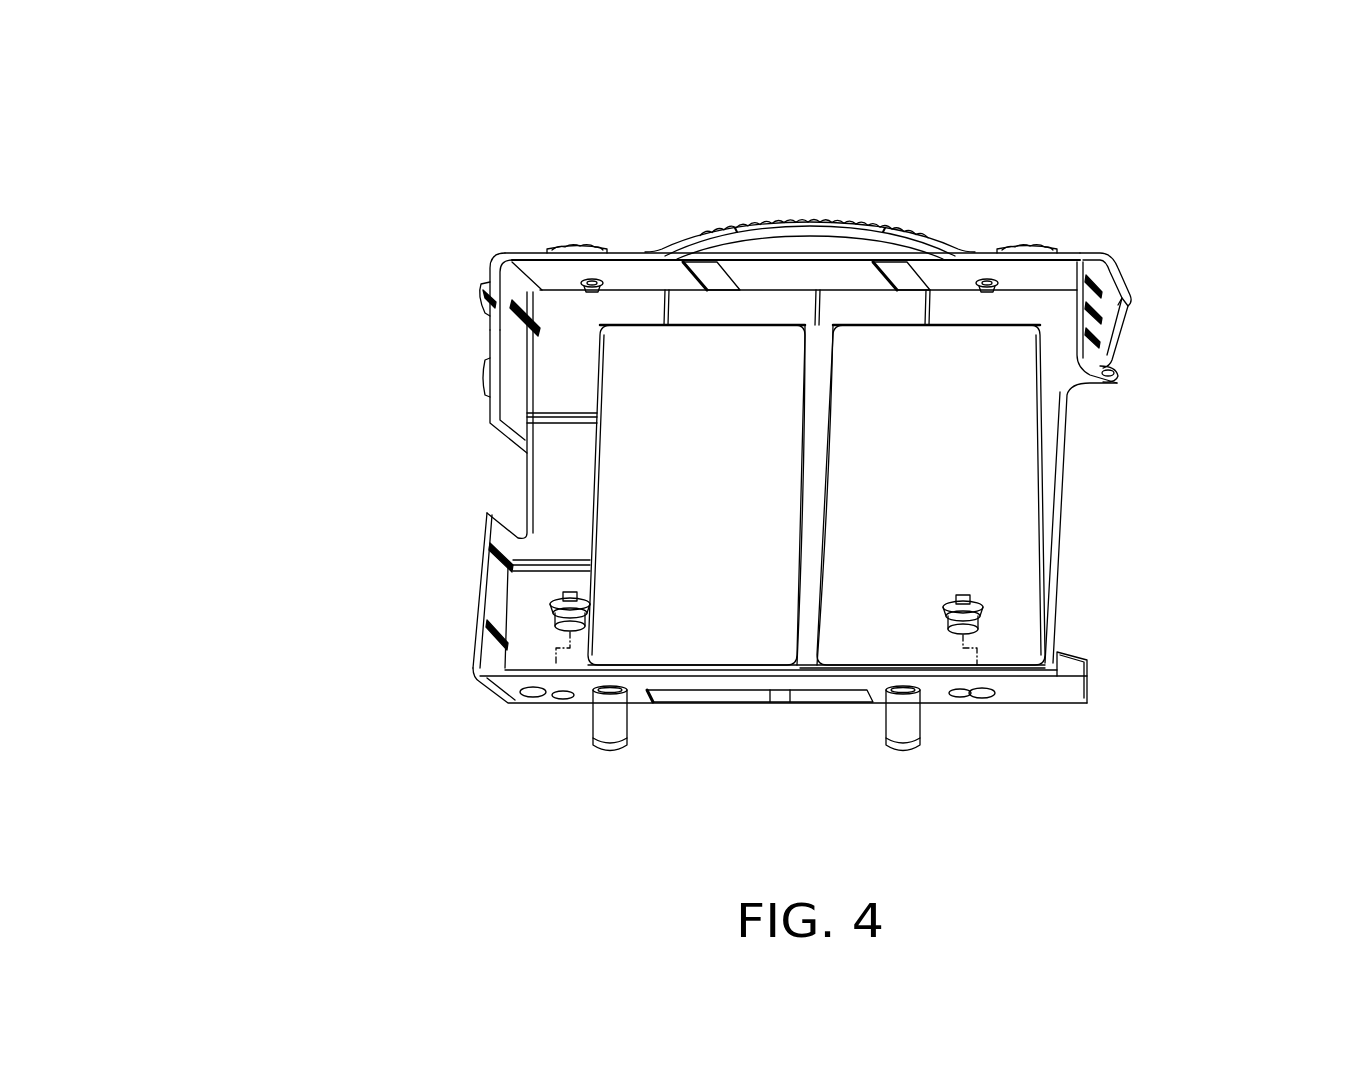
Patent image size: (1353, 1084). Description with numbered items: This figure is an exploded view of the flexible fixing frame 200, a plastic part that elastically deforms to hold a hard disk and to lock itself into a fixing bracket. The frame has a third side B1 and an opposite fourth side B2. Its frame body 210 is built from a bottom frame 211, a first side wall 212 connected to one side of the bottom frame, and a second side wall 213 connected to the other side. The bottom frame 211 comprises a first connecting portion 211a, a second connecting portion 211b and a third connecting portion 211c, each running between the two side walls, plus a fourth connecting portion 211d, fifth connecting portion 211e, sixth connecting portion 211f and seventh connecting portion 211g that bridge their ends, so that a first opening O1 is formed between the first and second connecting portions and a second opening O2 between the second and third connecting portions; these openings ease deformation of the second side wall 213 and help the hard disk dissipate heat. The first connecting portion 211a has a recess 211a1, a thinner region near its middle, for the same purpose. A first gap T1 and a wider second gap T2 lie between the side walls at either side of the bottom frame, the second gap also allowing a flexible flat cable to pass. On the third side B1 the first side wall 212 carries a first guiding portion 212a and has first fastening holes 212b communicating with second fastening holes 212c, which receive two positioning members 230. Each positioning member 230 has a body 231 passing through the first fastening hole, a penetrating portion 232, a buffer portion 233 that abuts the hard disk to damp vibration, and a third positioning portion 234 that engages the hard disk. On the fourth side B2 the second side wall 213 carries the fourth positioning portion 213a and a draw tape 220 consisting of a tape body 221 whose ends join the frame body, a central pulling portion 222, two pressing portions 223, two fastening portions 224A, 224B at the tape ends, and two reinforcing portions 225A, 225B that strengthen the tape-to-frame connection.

The flexible fixing frame 200 is at (1276, 819).
The frame body 210 is at (664, 525).
The bottom frame 211 is at (210, 394).
The first connecting portion 211a is at (540, 518).
The second connecting portion 211b is at (822, 471).
The third connecting portion 211c is at (1057, 467).
The fourth connecting portion 211d is at (688, 666).
The fifth connecting portion 211e is at (735, 310).
The sixth connecting portion 211f is at (871, 666).
The seventh connecting portion 211g is at (954, 310).
The recess 211a1 is at (576, 496).
The first side wall 212 is at (505, 688).
The first guiding portion 212a is at (612, 736).
The first fastening hole 212b is at (531, 698).
The second fastening hole 212c is at (563, 701).
The second side wall 213 is at (653, 274).
The fourth positioning portion 213a is at (588, 282).
The draw tape 220 is at (163, 60).
The tape body 221 is at (934, 252).
The pulling portion 222 is at (807, 221).
The pressing portion 223 is at (578, 249).
The fastening portion 224A is at (484, 291).
The fastening portion 224B is at (1130, 298).
The reinforcing portion 225A is at (487, 378).
The reinforcing portion 225B is at (1115, 375).
The positioning member 230 is at (600, 611).
The body 231 is at (554, 626).
The penetrating portion 232 is at (553, 614).
The buffer portion 233 is at (555, 604).
The third positioning portion 234 is at (564, 595).
The first opening O1 is at (628, 419).
The second opening O2 is at (1003, 518).
The first gap T1 is at (490, 477).
The second gap T2 is at (1095, 412).
The third side B1 is at (745, 692).
The fourth side B2 is at (794, 256).